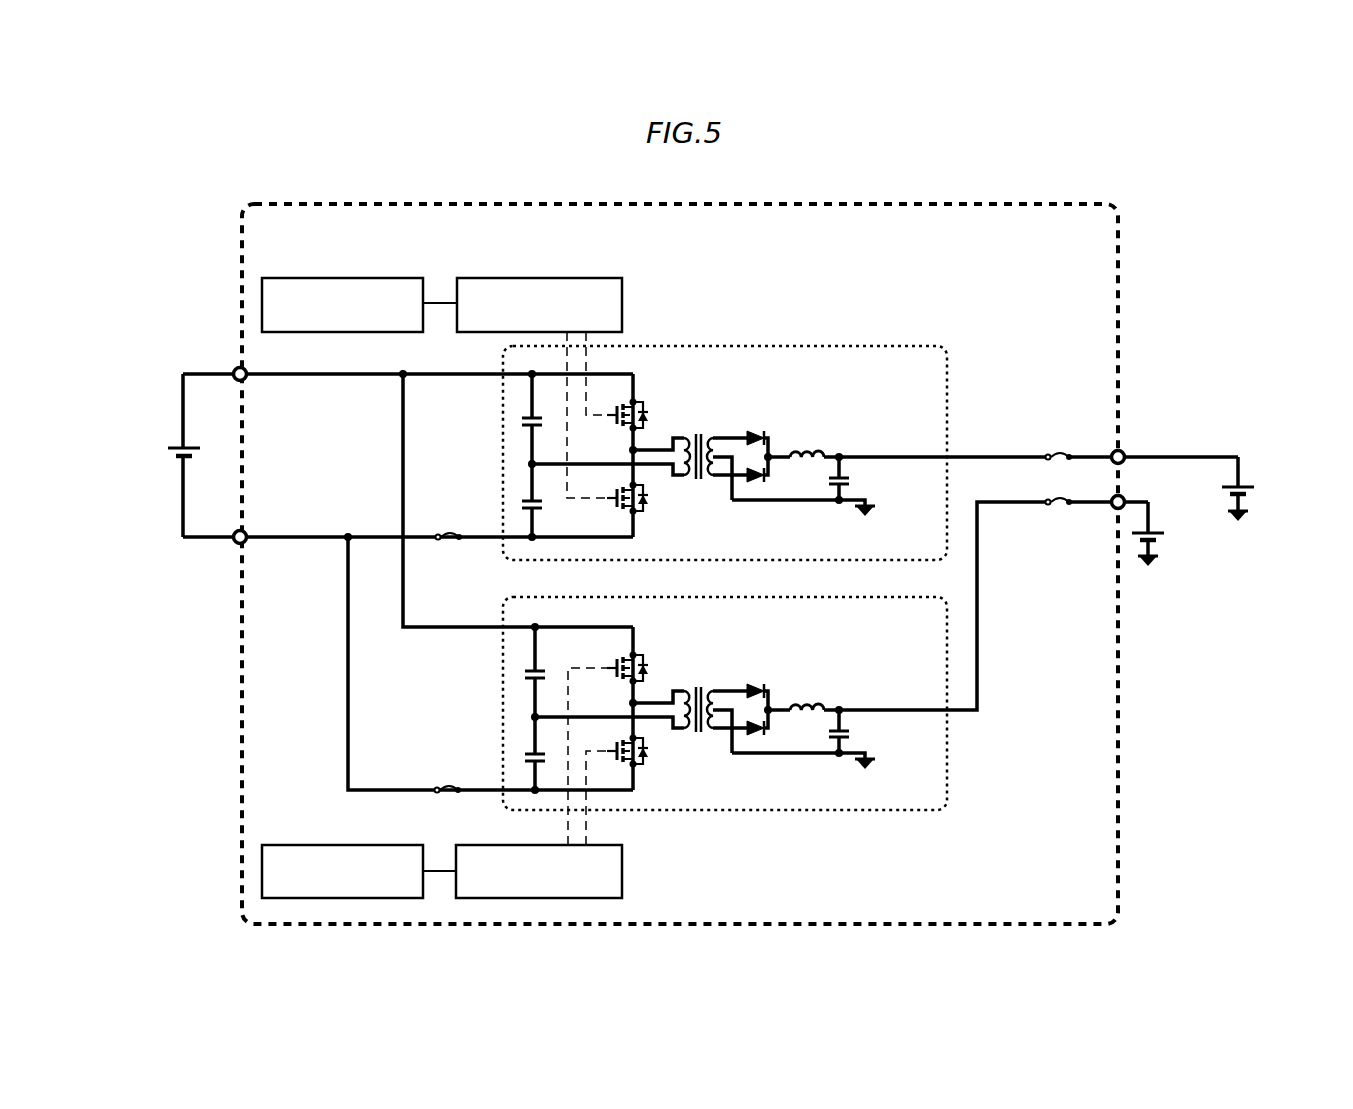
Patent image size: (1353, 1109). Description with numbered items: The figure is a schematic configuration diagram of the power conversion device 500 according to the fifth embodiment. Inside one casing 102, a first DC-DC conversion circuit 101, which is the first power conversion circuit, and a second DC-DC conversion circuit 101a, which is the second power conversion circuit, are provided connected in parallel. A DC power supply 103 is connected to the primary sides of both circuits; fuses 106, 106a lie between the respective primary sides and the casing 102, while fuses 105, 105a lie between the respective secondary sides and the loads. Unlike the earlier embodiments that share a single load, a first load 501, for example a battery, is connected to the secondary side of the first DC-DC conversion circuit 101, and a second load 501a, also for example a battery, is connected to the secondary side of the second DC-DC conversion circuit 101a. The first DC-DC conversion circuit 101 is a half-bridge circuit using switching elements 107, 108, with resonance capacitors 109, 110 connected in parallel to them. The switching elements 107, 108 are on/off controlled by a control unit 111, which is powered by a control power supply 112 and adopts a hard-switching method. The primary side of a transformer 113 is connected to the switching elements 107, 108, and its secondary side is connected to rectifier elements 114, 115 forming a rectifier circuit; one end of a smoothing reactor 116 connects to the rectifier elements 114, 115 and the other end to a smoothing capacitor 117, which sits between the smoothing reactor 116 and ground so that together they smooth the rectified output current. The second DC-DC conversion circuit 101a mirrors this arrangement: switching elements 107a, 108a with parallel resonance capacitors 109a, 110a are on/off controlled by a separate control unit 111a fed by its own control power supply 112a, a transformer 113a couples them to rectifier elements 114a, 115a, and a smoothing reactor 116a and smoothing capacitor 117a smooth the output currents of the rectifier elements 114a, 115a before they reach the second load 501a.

The casing 102 is at (371, 204).
The first DC-DC conversion circuit 101 is at (790, 345).
The second DC-DC conversion circuit 101a is at (788, 811).
The DC power supply 103 is at (186, 444).
The fuse 105 is at (1056, 455).
The fuse 105a is at (1056, 505).
The fuse 106 is at (446, 542).
The fuse 106a is at (446, 788).
The switching element 107 is at (642, 411).
The switching element 107a is at (638, 666).
The switching element 108 is at (644, 504).
The switching element 108a is at (646, 752).
The resonance capacitor 109 is at (522, 418).
The resonance capacitor 109a is at (524, 674).
The resonance capacitor 110 is at (527, 498).
The resonance capacitor 110a is at (524, 753).
The control unit 111 is at (554, 278).
The control unit 111a is at (621, 871).
The control power supply 112 is at (330, 278).
The control power supply 112a is at (322, 845).
The transformer 113 is at (698, 434).
The transformer 113a is at (698, 689).
The rectifier element 114 is at (762, 429).
The rectifier element 114a is at (764, 685).
The rectifier element 115 is at (768, 473).
The rectifier element 115a is at (762, 734).
The smoothing reactor 116 is at (822, 454).
The smoothing reactor 116a is at (820, 706).
The smoothing capacitor 117 is at (846, 480).
The smoothing capacitor 117a is at (853, 734).
The power conversion device 500 is at (1222, 723).
The first load 501 is at (1238, 486).
The second load 501a is at (1146, 544).